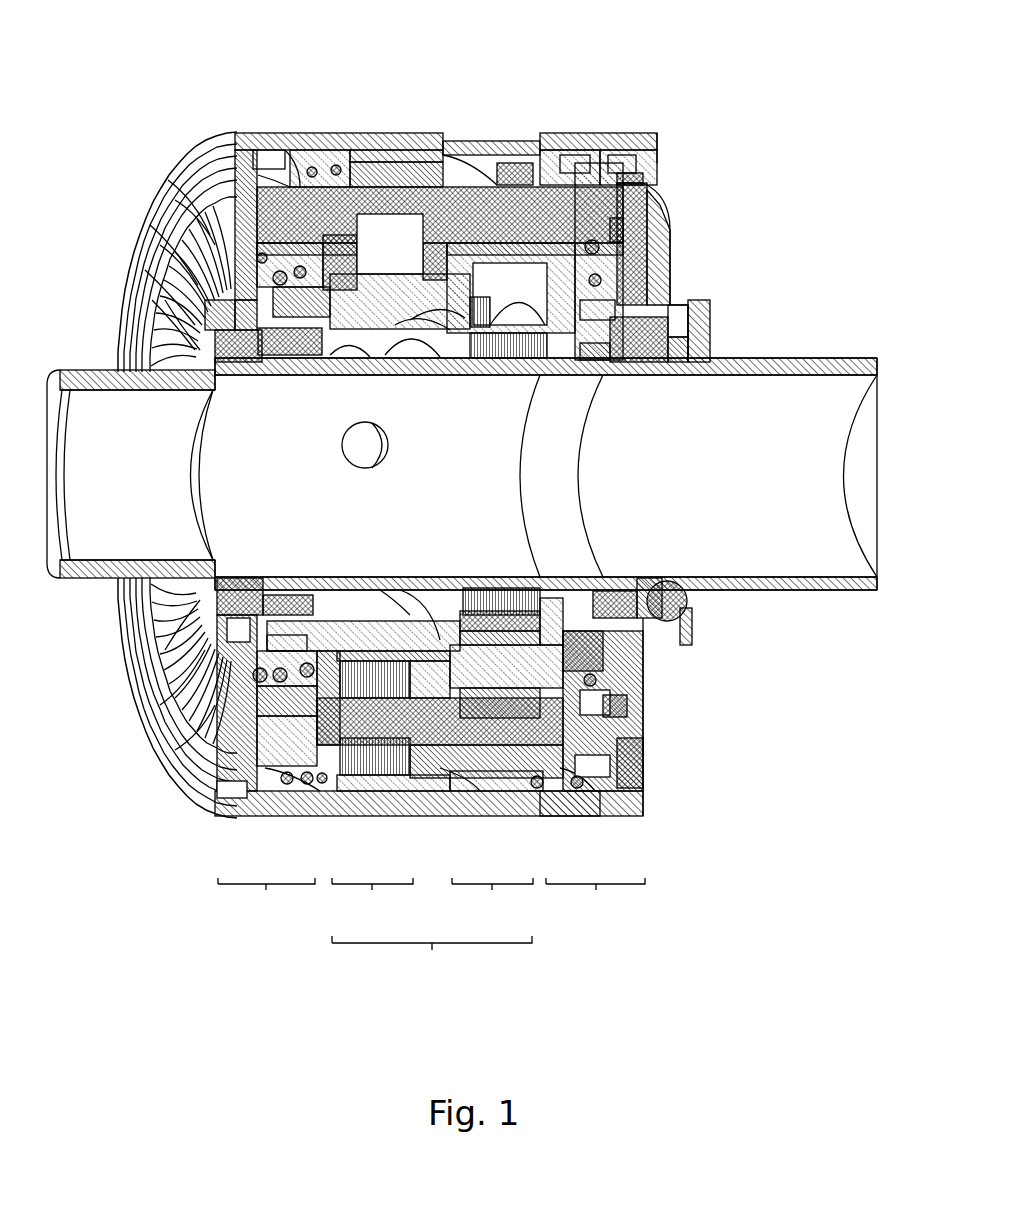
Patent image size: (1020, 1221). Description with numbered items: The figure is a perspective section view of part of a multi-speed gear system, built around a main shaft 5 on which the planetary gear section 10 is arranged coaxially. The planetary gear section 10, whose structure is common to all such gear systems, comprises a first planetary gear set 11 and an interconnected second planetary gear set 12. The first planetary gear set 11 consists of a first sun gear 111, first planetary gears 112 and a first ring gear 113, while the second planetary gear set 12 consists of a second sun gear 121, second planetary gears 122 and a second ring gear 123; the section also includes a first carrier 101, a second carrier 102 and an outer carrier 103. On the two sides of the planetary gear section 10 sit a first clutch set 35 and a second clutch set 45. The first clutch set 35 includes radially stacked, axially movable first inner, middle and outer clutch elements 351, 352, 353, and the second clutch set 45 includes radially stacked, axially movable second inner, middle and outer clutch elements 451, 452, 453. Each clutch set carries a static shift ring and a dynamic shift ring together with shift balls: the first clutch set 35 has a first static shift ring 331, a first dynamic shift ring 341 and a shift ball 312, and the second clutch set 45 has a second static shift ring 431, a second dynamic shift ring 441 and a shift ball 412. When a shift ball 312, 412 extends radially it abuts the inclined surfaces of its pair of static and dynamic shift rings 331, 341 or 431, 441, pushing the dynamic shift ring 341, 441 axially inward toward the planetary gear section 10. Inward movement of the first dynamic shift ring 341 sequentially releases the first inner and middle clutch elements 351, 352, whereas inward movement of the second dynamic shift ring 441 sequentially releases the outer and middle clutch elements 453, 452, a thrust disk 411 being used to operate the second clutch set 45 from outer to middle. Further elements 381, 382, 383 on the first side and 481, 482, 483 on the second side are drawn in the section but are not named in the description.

The main shaft 5 is at (772, 346).
The planetary gear section 10 is at (432, 957).
The first planetary gear set 11 is at (400, 596).
The second planetary gear set 12 is at (511, 581).
The first clutch set 35 is at (216, 525).
The second clutch set 45 is at (595, 541).
The first carrier 101 is at (520, 335).
The second carrier 102 is at (470, 200).
The outer carrier 103 is at (447, 182).
The first sun gear 111 is at (343, 133).
The first planetary gears 112 is at (333, 813).
The first ring gear 113 is at (385, 268).
The second sun gear 121 is at (567, 170).
The second planetary gears 122 is at (550, 757).
The second ring gear 123 is at (537, 190).
The shift ball 312 is at (213, 600).
The first static shift ring 331 is at (205, 352).
The first dynamic shift ring 341 is at (215, 335).
The first inner clutch element 351 is at (253, 320).
The first middle clutch element 352 is at (237, 233).
The first outer clutch element 353 is at (207, 182).
The bearing 381 is at (253, 680).
The bearing race 382 is at (250, 708).
The bearing retainer 383 is at (257, 768).
The thrust disk 411 is at (652, 196).
The shift ball 412 is at (707, 605).
The second static shift ring 431 is at (703, 318).
The second dynamic shift ring 441 is at (680, 302).
The second inner clutch element 451 is at (662, 280).
The second middle clutch element 452 is at (665, 218).
The second outer clutch element 453 is at (660, 153).
The bearing 481 is at (613, 680).
The bearing race 482 is at (627, 710).
The bearing retainer 483 is at (613, 770).